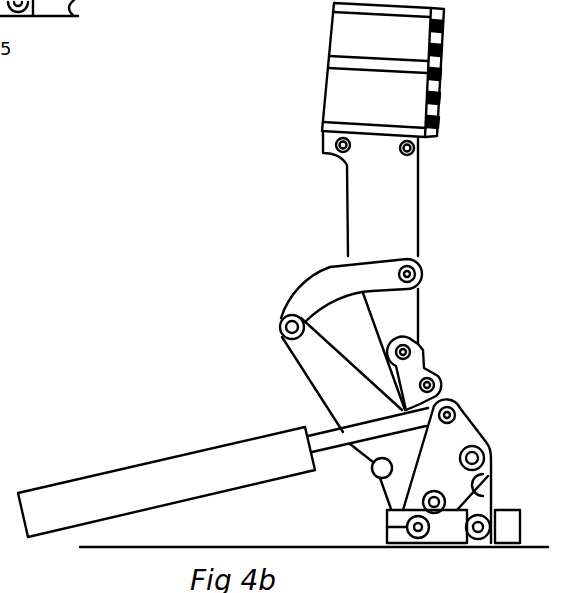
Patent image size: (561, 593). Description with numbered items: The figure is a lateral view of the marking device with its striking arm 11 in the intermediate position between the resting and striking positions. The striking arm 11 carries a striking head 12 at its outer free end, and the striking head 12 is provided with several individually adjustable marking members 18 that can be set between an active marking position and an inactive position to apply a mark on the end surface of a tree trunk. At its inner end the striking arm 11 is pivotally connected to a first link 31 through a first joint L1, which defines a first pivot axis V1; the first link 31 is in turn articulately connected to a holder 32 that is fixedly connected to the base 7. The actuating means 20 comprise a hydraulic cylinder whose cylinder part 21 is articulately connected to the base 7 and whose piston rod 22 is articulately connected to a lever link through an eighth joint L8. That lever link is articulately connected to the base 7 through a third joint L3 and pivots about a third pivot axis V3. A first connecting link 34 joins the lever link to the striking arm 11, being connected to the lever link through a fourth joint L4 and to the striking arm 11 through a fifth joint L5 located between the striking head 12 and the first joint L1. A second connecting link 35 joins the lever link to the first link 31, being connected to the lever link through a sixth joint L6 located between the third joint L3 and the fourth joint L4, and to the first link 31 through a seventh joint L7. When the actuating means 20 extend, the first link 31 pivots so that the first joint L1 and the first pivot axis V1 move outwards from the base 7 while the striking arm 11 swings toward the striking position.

The striking head 12 is at (341, 41).
The marking member 18 is at (438, 48).
The striking arm 11 is at (419, 190).
The first connecting link 34 is at (330, 277).
The fifth joint L5 is at (422, 272).
The fourth joint L4 is at (280, 326).
The second connecting link 35 is at (393, 398).
The first pivot axis V1 is at (426, 343).
The first joint L1 is at (410, 355).
The seventh joint L7 is at (440, 378).
The eighth joint L8 is at (452, 408).
The first link 31 is at (443, 392).
The holder 32 is at (486, 502).
The actuating means 20 is at (223, 462).
The cylinder part 21 is at (146, 462).
The piston rod 22 is at (328, 452).
The sixth joint L6 is at (369, 486).
The base 7 is at (163, 549).
The third pivot axis V3 is at (420, 536).
The third joint L3 is at (425, 536).